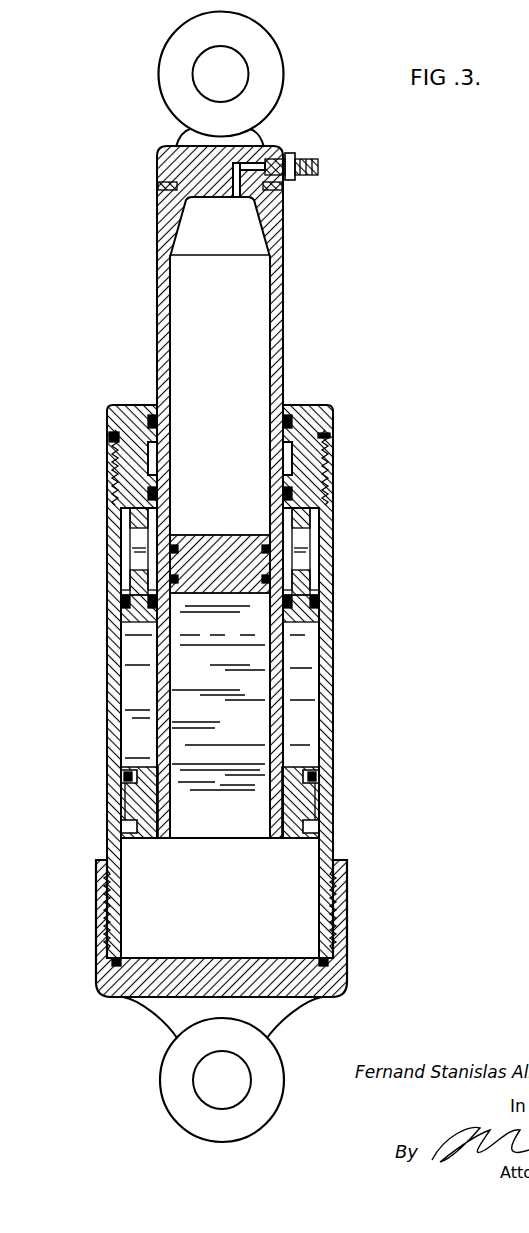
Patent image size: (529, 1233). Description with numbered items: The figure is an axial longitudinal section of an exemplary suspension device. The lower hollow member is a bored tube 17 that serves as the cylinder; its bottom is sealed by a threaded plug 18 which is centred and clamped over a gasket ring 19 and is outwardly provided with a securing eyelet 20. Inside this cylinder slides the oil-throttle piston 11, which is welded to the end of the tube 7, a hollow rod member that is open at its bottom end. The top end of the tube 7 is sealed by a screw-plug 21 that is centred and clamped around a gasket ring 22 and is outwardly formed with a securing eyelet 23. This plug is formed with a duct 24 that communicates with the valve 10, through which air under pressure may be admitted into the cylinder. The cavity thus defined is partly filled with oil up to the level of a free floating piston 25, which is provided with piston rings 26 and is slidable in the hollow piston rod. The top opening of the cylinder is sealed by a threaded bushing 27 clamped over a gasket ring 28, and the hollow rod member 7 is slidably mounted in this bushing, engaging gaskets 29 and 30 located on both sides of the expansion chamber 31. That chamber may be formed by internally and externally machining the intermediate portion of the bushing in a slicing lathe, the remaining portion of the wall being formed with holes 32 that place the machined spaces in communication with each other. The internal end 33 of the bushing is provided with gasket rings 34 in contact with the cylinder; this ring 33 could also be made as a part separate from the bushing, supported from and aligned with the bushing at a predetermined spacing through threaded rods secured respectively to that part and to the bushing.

The hollow rod member 7 is at (160, 684).
The valve 10 is at (312, 158).
The oil-throttle piston 11 is at (302, 828).
The bored tube 17 is at (322, 652).
The threaded plug 18 is at (312, 985).
The gasket ring 19 is at (100, 988).
The securing eyelet 20 is at (268, 1073).
The screw-plug 21 is at (172, 160).
The gasket ring 22 is at (162, 188).
The securing eyelet 23 is at (272, 78).
The duct 24 is at (238, 198).
The free floating piston 25 is at (195, 535).
The piston rings 26 is at (177, 597).
The threaded bushing 27 is at (128, 413).
The gasket ring 28 is at (109, 437).
The gasket 29 is at (157, 492).
The gasket 30 is at (158, 628).
The expansion chamber 31 is at (153, 560).
The holes 32 is at (140, 542).
The internal end 33 is at (124, 606).
The gasket rings 34 is at (121, 598).